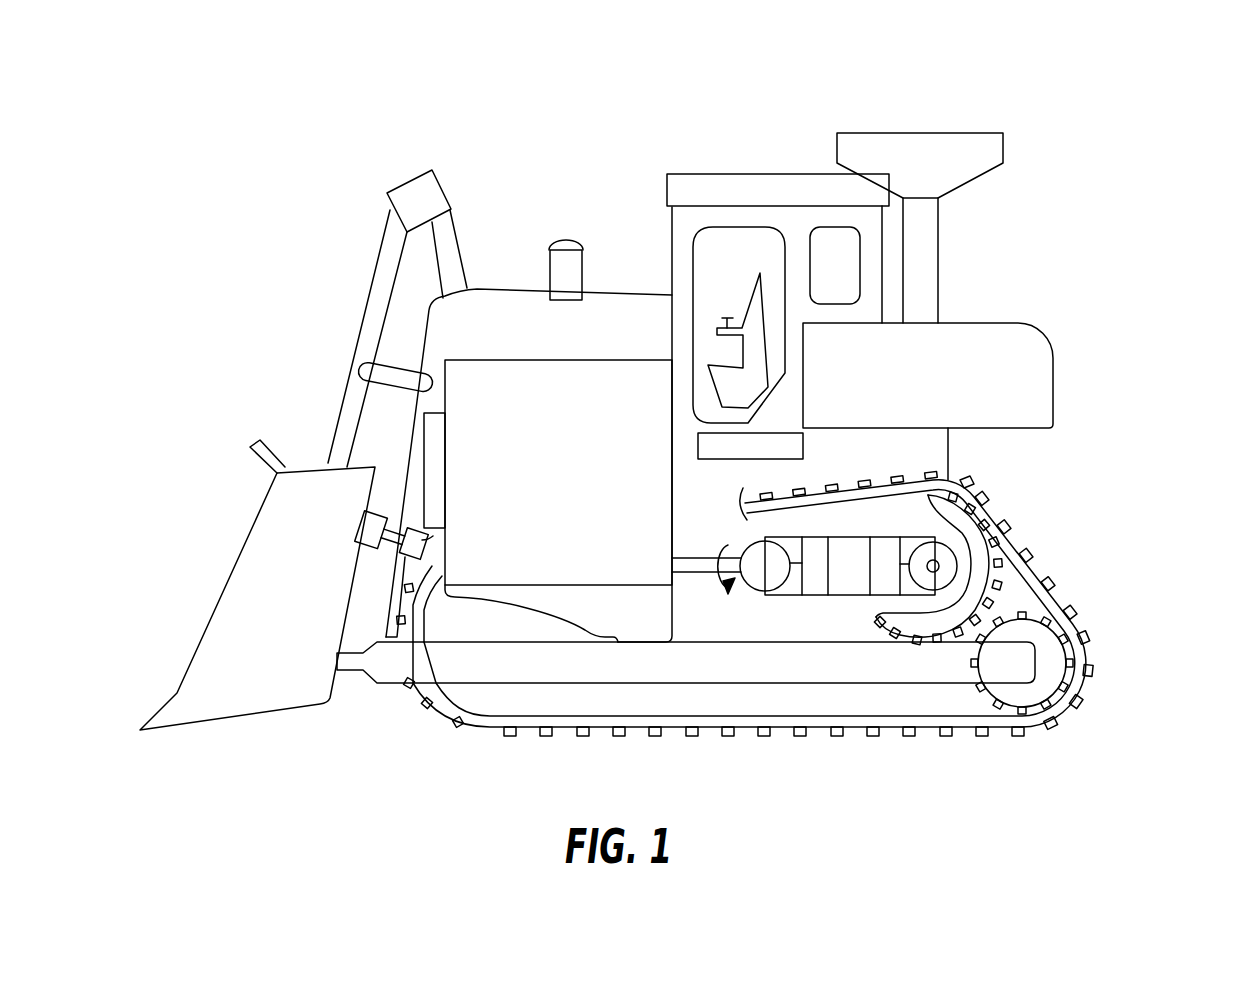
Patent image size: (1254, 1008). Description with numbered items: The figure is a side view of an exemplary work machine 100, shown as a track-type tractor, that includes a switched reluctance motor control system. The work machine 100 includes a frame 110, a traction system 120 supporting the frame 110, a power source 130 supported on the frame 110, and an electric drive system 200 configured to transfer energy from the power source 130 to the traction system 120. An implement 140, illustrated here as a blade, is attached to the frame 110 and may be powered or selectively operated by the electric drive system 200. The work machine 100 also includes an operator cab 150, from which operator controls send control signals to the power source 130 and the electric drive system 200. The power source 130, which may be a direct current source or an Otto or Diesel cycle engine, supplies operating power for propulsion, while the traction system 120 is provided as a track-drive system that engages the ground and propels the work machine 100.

The work machine 100 is at (1090, 112).
The frame 110 is at (948, 458).
The traction system 120 is at (1095, 660).
The power source 130 is at (573, 465).
The implement 140 is at (228, 583).
The operator cab 150 is at (725, 237).
The electric drive system 200 is at (847, 595).